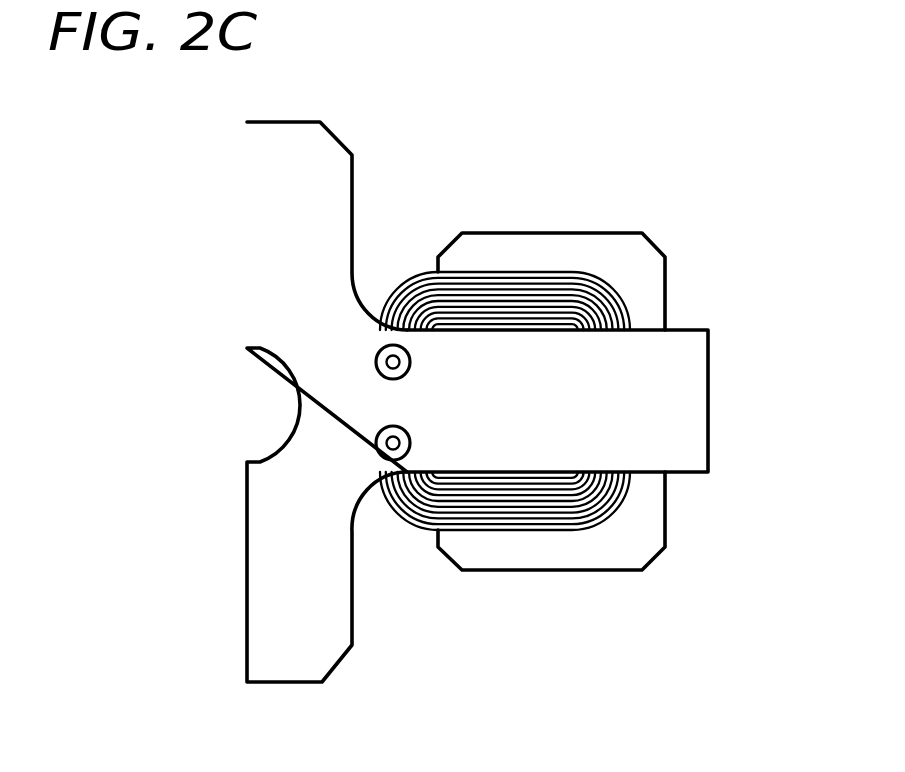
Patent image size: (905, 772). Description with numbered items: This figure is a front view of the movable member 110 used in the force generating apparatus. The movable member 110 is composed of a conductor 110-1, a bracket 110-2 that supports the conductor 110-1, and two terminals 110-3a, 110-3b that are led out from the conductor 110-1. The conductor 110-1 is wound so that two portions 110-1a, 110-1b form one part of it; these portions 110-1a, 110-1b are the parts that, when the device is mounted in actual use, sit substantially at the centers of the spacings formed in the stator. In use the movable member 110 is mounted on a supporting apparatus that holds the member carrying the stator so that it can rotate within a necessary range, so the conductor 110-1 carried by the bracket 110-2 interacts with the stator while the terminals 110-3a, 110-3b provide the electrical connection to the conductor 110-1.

The movable member 110 is at (610, 102).
The conductor 110-1 is at (605, 298).
The portion of the conductor 110-1a is at (572, 330).
The portion of the conductor 110-1b is at (572, 472).
The bracket 110-2 is at (327, 163).
The terminal 110-3a is at (376, 362).
The terminal 110-3b is at (376, 447).